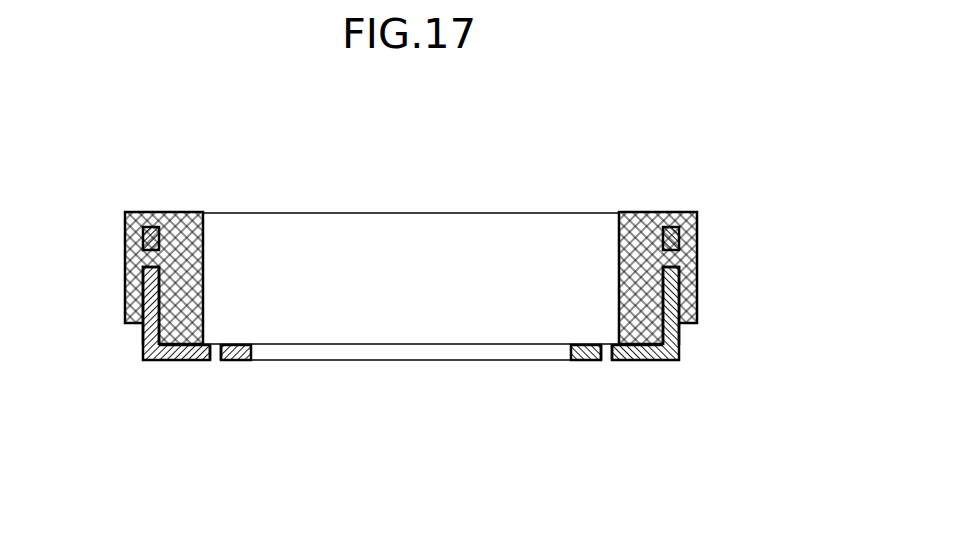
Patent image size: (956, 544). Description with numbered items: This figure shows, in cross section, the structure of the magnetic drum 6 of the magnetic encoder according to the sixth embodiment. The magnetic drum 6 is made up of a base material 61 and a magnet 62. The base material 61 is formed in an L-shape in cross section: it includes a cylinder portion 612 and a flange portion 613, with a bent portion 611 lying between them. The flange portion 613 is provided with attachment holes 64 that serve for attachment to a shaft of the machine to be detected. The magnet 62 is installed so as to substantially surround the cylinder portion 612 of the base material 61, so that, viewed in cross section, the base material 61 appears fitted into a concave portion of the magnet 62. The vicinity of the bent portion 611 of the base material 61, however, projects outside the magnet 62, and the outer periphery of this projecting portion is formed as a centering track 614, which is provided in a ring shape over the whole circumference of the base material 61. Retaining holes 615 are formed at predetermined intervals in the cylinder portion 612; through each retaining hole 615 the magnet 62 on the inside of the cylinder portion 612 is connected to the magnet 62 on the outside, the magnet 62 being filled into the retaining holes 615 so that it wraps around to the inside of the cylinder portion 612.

The magnetic drum 6 is at (386, 163).
The base material 61 is at (194, 467).
The bent portion 611 is at (155, 361).
The cylinder portion 612 is at (148, 280).
The flange portion 613 is at (248, 361).
The centering track 614 is at (142, 347).
The retaining hole 615 is at (159, 250).
The magnet 62 is at (165, 212).
The attachment hole 64 is at (215, 361).